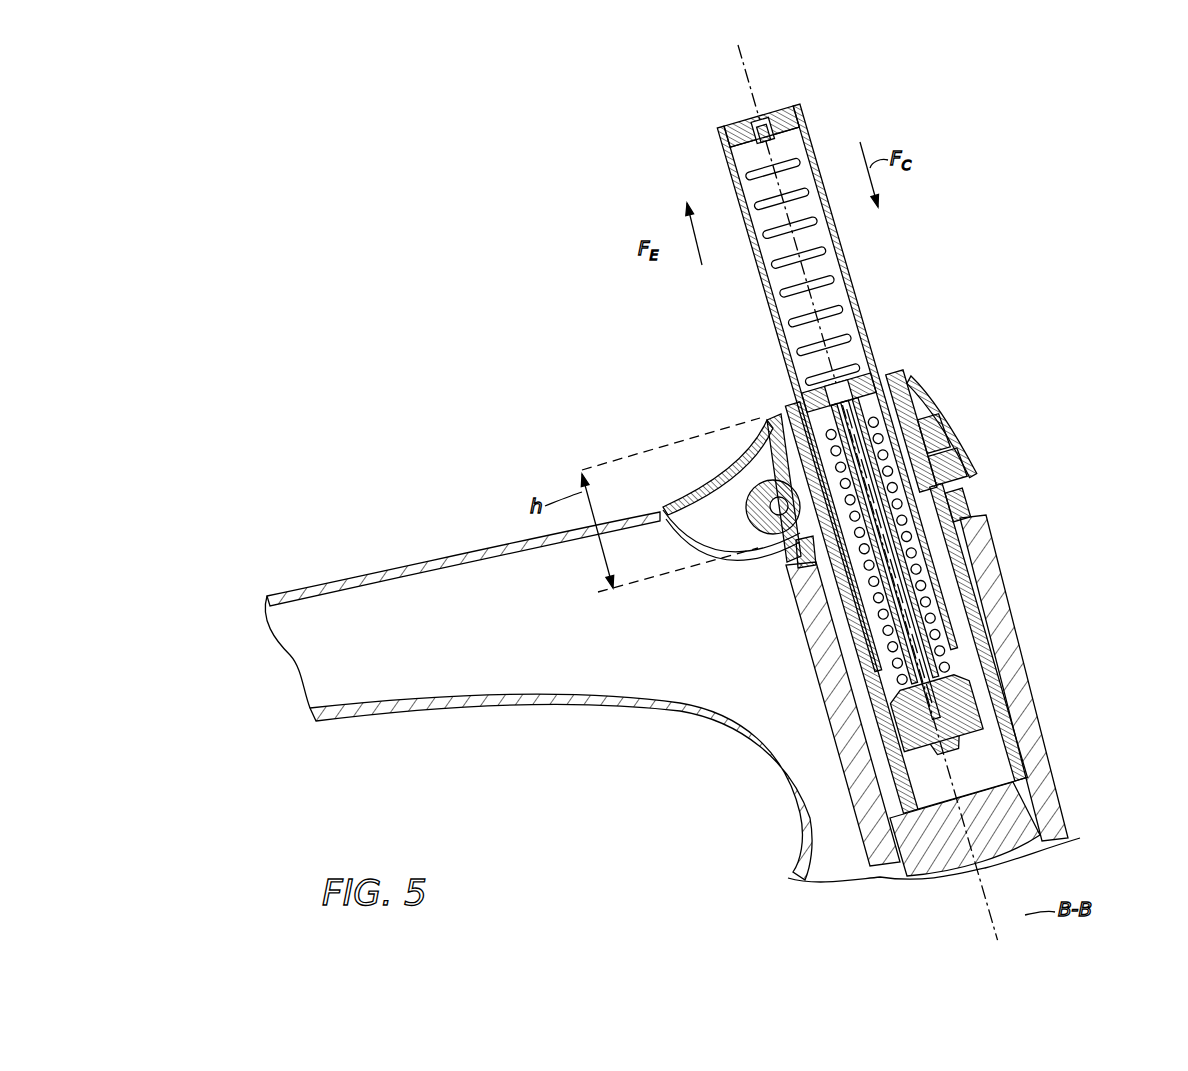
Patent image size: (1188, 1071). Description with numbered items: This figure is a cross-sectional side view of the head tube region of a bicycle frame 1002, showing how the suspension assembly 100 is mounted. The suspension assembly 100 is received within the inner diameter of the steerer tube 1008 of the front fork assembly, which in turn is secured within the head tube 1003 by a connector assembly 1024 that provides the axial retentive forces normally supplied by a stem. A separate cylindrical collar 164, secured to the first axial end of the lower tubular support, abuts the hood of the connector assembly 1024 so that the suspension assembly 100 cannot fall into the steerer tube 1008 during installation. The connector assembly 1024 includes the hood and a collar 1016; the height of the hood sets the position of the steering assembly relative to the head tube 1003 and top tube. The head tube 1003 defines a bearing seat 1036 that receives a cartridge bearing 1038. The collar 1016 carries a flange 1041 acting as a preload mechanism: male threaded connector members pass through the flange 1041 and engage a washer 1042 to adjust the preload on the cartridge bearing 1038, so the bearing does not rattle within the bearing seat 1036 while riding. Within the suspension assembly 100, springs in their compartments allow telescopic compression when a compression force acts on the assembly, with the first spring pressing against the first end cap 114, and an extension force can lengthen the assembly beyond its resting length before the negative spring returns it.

The suspension assembly 100 is at (932, 406).
The first end cap 114 is at (786, 104).
The cylindrical collar 164 is at (900, 378).
The frame 1002 is at (390, 568).
The head tube 1003 is at (980, 698).
The steerer tube 1008 is at (990, 680).
The collar 1016 is at (965, 471).
The connector assembly 1024 is at (991, 407).
The bearing seat 1036 is at (975, 531).
The cartridge bearing 1038 is at (965, 497).
The flange 1041 is at (945, 432).
The washer 1042 is at (790, 562).